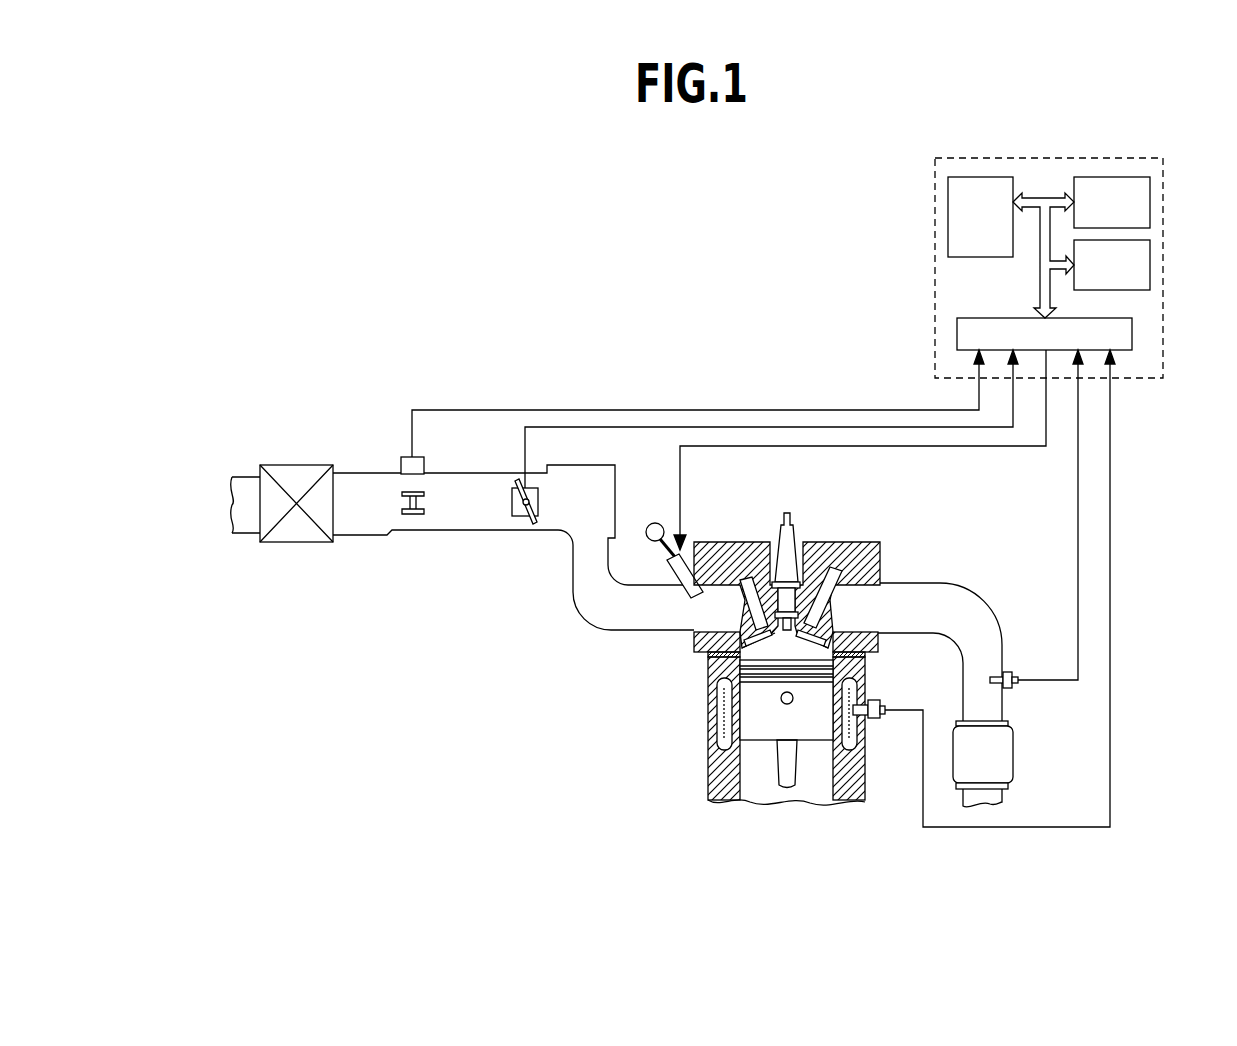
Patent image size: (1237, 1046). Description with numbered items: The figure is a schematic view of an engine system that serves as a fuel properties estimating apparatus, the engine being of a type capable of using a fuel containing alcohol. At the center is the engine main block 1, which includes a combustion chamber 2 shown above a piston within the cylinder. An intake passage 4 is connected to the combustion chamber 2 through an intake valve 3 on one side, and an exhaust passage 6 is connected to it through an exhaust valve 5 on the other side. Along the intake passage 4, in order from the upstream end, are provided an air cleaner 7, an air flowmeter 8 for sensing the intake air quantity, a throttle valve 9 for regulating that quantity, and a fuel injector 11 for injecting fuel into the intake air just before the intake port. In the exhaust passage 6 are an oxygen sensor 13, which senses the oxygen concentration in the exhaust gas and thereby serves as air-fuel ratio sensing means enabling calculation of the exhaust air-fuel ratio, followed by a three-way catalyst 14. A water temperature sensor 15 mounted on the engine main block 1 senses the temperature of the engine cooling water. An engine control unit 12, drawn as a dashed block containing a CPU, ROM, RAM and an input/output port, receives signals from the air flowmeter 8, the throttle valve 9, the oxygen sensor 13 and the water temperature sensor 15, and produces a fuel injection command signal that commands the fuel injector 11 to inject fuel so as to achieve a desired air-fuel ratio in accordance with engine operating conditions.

The engine main block 1 is at (704, 763).
The combustion chamber 2 is at (763, 653).
The intake valve 3 is at (740, 580).
The intake passage 4 is at (587, 617).
The exhaust valve 5 is at (818, 588).
The exhaust passage 6 is at (977, 598).
The air cleaner 7 is at (292, 474).
The air flowmeter 8 is at (400, 458).
The throttle valve 9 is at (527, 524).
The fuel injector 11 is at (673, 572).
The engine control unit (ECU) 12 is at (930, 201).
The oxygen sensor 13 is at (1013, 672).
The three-way catalyst 14 is at (1003, 763).
The water temperature sensor 15 is at (887, 700).